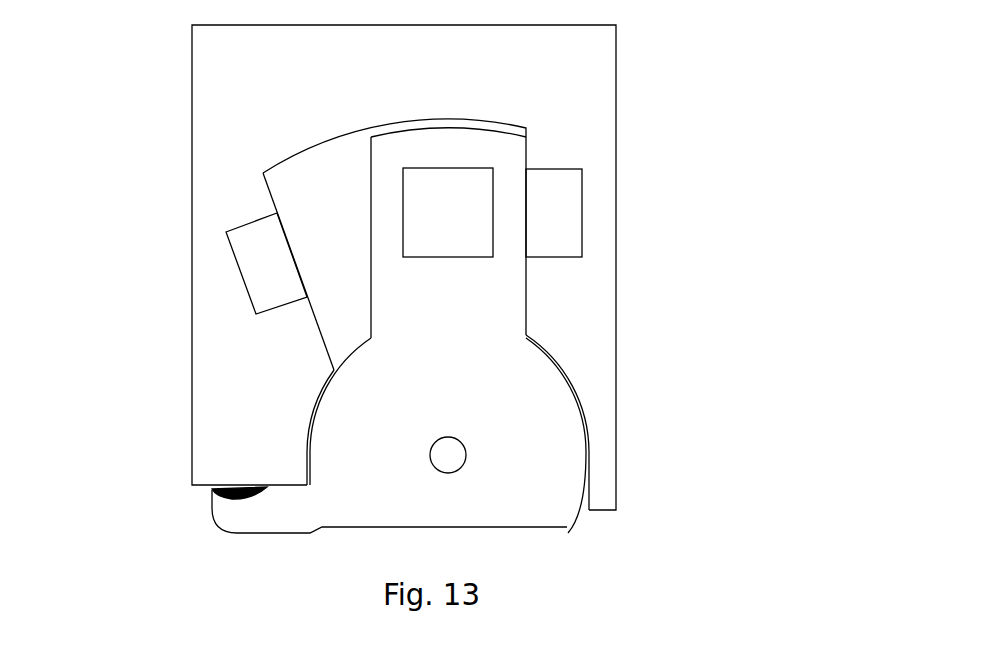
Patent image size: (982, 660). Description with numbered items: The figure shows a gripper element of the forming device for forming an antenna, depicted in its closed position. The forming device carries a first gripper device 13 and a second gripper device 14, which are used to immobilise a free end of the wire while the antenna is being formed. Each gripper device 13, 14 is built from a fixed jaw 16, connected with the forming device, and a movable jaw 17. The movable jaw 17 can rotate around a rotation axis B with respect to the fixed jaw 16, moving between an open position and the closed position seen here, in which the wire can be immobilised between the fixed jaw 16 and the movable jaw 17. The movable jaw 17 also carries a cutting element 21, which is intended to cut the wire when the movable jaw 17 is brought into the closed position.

The first gripper device 13 is at (537, 326).
The second gripper device 14 is at (687, 310).
The fixed jaw 16 is at (616, 397).
The movable jaw 17 is at (277, 512).
The cutting element 21 is at (238, 488).
The rotation axis B is at (452, 459).